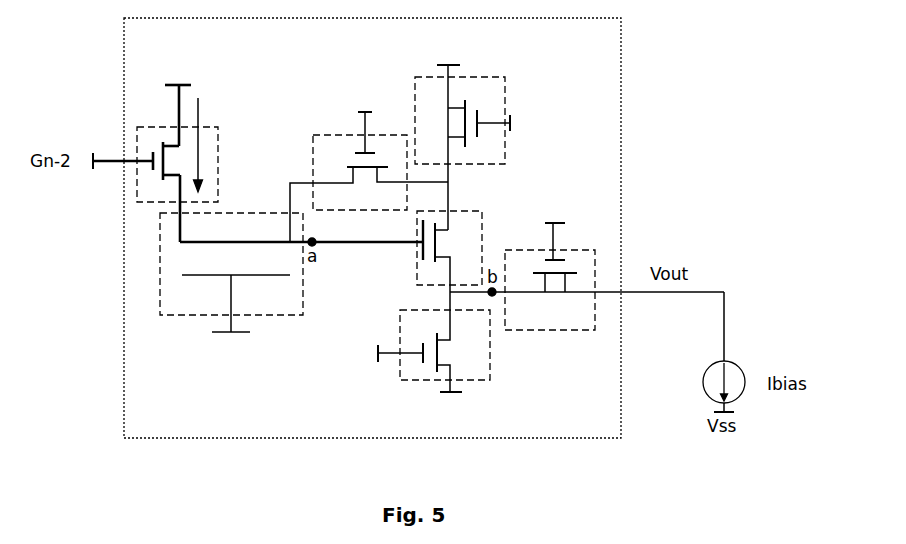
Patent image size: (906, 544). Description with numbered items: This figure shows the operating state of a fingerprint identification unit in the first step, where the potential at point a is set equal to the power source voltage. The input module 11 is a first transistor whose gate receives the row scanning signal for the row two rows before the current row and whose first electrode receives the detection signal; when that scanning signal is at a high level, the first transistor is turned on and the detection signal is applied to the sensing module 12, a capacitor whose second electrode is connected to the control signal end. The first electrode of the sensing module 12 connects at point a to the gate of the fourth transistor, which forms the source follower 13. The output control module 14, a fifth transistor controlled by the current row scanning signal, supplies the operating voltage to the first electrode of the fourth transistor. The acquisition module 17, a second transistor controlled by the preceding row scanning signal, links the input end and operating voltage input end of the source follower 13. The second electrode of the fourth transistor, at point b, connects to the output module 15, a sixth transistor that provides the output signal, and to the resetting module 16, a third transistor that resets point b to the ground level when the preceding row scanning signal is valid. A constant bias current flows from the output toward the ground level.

The input module 11 is at (190, 126).
The sensing module 12 is at (237, 213).
The source follower 13 is at (480, 212).
The output control module 14 is at (496, 77).
The output module 15 is at (595, 252).
The resetting module 16 is at (400, 380).
The acquisition module 17 is at (343, 134).